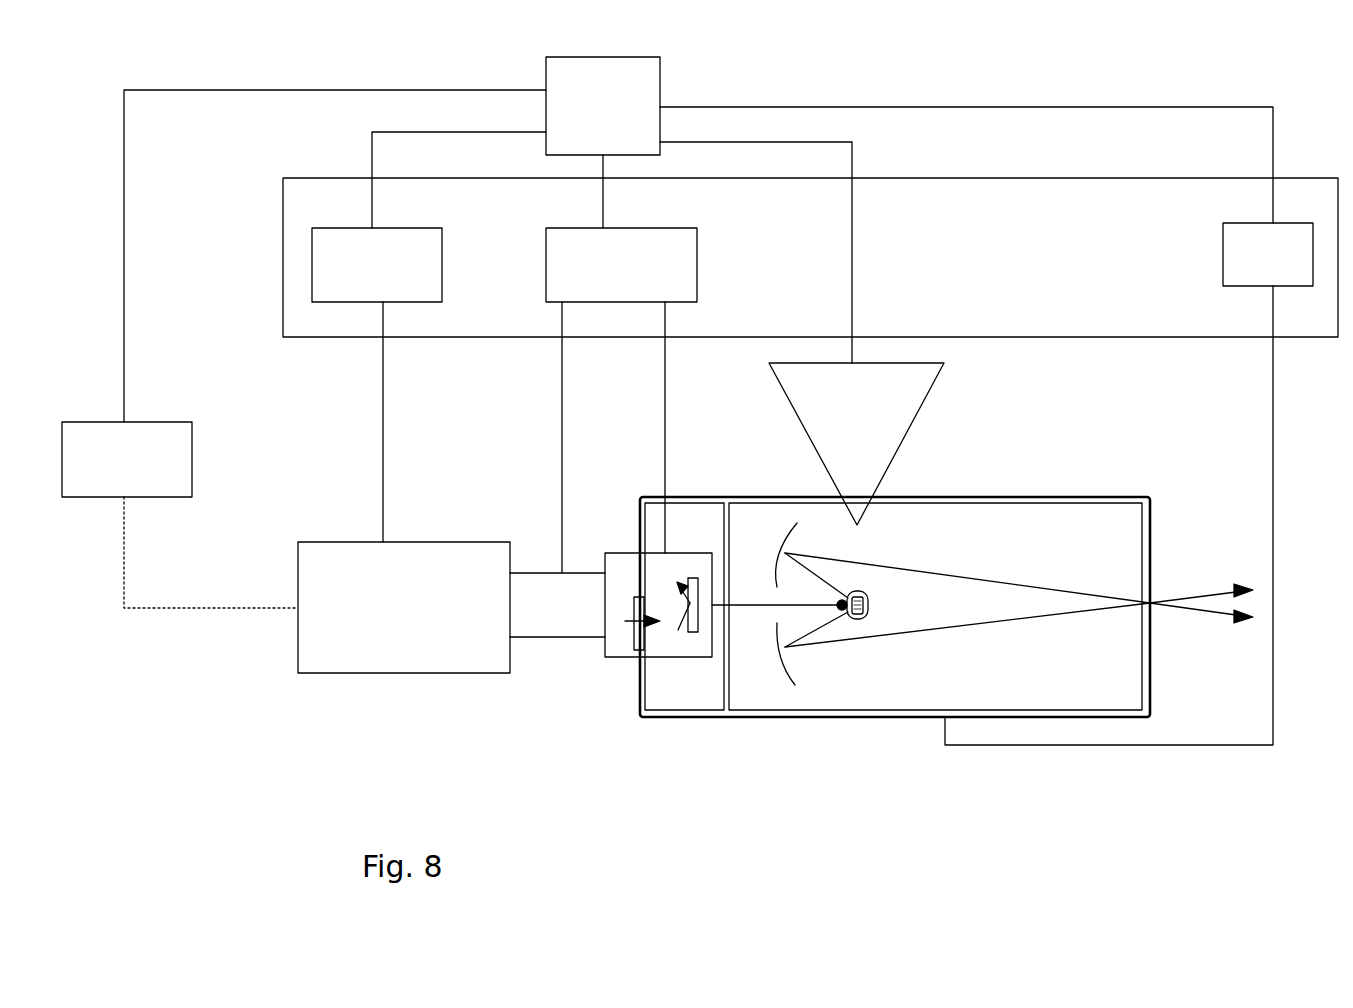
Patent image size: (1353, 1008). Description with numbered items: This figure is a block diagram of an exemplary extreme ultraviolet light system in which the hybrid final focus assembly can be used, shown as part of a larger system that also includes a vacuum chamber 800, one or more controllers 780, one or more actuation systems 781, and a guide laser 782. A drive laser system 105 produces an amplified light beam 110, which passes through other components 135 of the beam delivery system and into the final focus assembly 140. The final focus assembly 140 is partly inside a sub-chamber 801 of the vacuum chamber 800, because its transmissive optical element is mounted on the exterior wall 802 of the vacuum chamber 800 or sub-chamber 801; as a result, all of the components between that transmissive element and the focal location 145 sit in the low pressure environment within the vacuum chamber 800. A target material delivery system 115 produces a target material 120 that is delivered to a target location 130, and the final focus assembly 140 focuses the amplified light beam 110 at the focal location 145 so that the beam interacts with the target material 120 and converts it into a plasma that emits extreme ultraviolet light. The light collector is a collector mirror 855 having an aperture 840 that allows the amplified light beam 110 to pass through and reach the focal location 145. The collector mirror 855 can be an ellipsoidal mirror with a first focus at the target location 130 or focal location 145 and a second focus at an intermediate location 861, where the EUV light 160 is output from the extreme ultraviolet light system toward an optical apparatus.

The controller 780 is at (603, 106).
The actuation system 781 is at (812, 262).
The guide laser 782 is at (127, 459).
The drive laser system 105 is at (404, 607).
The other components 135 is at (557, 605).
The final focus assembly 140 is at (623, 552).
The exterior wall 802 is at (638, 672).
The sub-chamber 801 is at (678, 718).
The vacuum chamber 800 is at (1080, 500).
The amplified light beam 110 is at (757, 607).
The target material delivery system 115 is at (790, 403).
The aperture 840 is at (772, 596).
The collector mirror 855 is at (795, 685).
The EUV light 160 is at (1028, 588).
The intermediate location 861 is at (1168, 608).
The target location 130 is at (866, 614).
The target material 120 is at (866, 598).
The focal location 145 is at (841, 611).